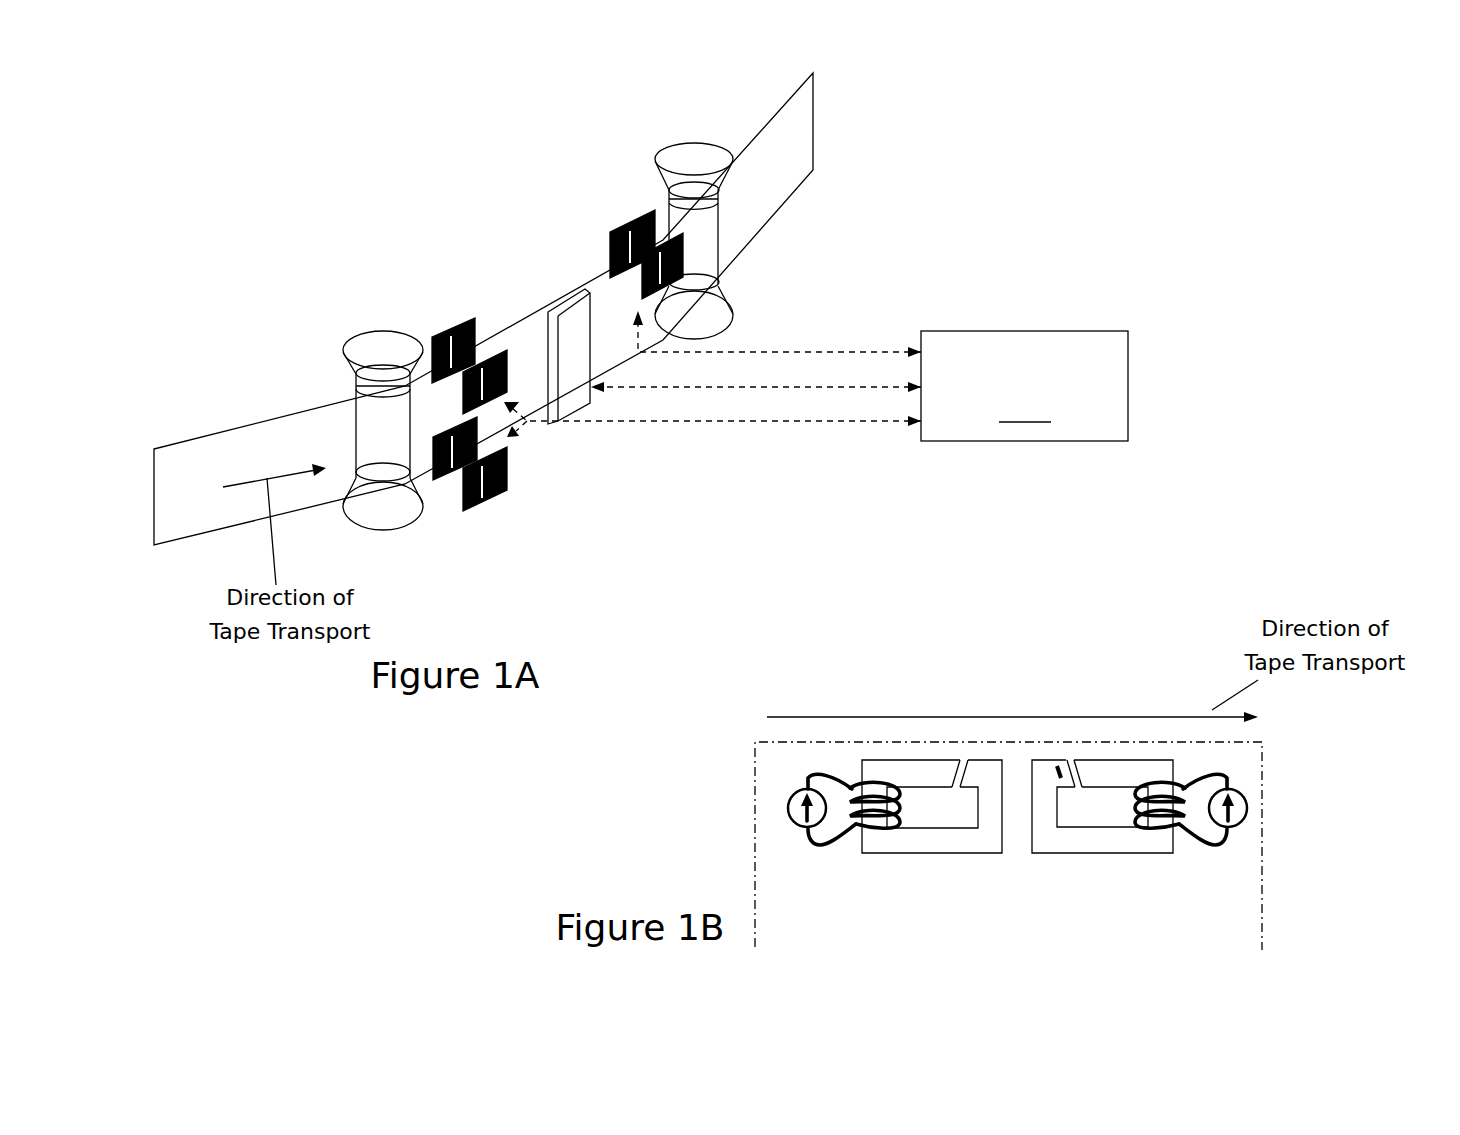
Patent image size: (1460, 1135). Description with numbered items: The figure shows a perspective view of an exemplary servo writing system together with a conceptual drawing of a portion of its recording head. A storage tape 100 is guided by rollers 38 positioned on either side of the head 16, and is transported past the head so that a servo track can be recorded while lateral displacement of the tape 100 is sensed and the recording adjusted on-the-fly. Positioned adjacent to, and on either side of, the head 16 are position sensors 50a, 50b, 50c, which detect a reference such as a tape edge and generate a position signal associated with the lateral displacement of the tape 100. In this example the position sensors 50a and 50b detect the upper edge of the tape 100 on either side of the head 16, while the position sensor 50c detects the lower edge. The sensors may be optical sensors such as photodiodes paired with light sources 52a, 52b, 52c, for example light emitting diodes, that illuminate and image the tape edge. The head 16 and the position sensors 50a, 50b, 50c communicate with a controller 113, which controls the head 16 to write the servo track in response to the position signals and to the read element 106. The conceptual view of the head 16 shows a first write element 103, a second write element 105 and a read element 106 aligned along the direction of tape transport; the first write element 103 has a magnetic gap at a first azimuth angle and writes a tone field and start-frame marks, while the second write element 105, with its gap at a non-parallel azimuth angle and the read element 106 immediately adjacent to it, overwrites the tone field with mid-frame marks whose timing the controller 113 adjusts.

In FIG. 1A, the tape 100 is at (260, 445).
In FIG. 1A, the rollers 38 is at (350, 347).
In FIG. 1A, the position sensor 50a is at (453, 318).
In FIG. 1A, the position sensor 50b is at (625, 225).
In FIG. 1A, the position sensor 50c is at (450, 485).
In FIG. 1A, the light source 52a is at (498, 352).
In FIG. 1A, the light source 52b is at (680, 270).
In FIG. 1A, the light source 52c is at (493, 497).
In FIG. 1A, the head 16 is at (570, 400).
In FIG. 1B, the head 16 is at (972, 794).
In FIG. 1A, the controller 113 is at (816, 376).
In FIG. 1B, the first write element 103 is at (953, 783).
In FIG. 1B, the second write element 105 is at (1079, 768).
In FIG. 1B, the read element 106 is at (1056, 773).